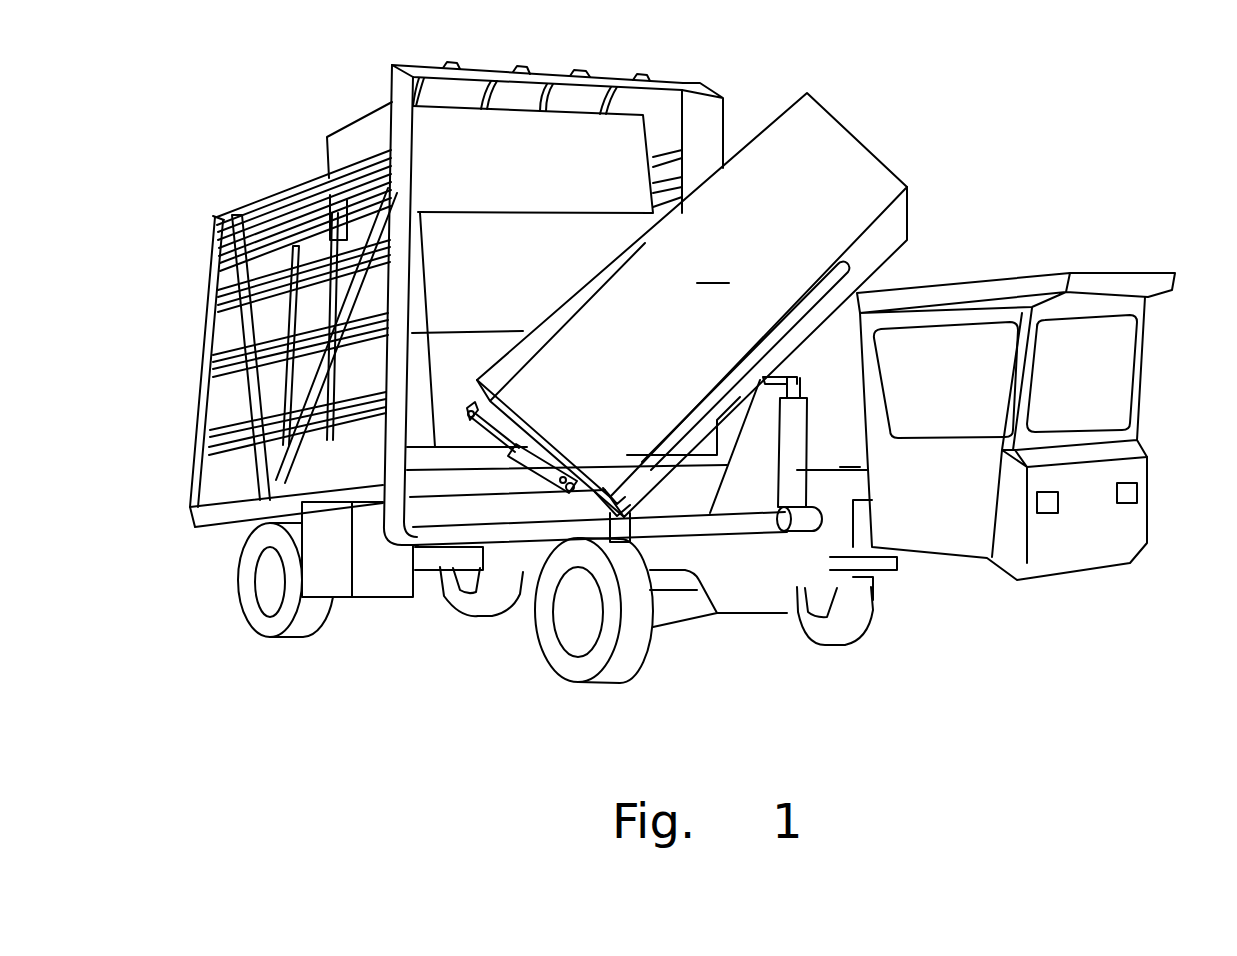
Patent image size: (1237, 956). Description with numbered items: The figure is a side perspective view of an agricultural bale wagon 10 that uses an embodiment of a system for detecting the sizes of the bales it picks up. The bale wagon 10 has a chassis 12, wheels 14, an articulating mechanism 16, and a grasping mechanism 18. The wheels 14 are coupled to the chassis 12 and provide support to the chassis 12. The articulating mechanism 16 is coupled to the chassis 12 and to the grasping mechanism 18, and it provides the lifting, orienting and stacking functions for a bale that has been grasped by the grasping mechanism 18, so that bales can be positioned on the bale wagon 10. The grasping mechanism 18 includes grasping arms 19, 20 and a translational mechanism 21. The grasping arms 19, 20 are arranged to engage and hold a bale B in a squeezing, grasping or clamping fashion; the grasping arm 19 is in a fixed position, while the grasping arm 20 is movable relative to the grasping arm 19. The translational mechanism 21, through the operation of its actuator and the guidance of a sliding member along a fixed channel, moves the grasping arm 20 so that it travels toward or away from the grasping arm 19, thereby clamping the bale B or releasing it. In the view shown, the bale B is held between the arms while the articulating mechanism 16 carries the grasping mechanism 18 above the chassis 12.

The bale wagon 10 is at (704, 392).
The chassis 12 is at (746, 618).
The wheels 14 is at (253, 608).
The articulating mechanism 16 is at (470, 652).
The grasping mechanism 18 is at (482, 340).
The grasping arm 19 is at (667, 437).
The grasping arm 20 is at (523, 347).
The translational mechanism 21 is at (493, 485).
The bale B is at (687, 317).